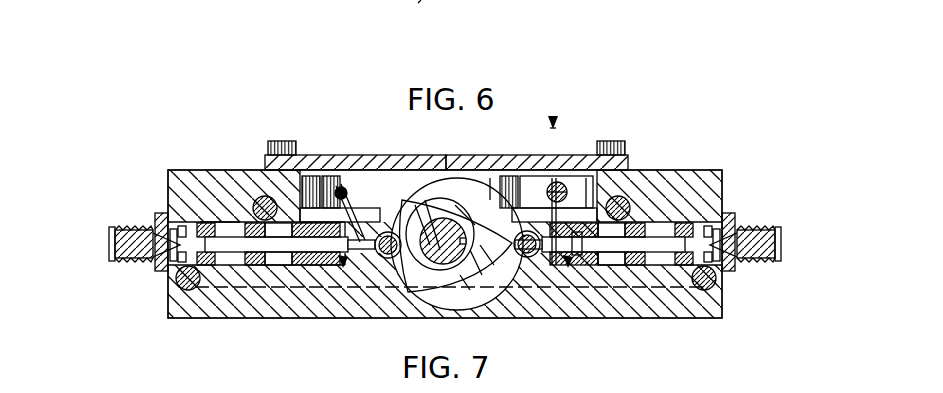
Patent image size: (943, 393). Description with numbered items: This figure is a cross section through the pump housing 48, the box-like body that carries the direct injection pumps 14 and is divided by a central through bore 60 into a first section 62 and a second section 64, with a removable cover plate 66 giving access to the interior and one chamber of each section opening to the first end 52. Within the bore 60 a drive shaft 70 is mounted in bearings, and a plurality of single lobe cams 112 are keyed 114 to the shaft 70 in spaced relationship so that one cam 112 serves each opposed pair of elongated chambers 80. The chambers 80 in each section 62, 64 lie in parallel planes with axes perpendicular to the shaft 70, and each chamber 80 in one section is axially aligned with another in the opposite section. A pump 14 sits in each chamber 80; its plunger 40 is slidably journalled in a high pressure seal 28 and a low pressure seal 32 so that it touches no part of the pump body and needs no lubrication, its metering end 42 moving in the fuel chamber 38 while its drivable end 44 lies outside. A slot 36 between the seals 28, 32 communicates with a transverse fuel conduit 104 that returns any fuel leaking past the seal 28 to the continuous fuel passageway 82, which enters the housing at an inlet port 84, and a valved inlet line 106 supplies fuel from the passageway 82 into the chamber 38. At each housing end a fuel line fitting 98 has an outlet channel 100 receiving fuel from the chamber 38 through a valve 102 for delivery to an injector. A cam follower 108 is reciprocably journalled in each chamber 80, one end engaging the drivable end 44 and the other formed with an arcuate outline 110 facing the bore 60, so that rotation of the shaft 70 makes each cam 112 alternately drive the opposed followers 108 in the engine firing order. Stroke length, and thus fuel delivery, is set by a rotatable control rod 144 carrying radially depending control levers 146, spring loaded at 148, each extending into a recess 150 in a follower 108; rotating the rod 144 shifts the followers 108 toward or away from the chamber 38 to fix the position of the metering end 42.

The direct injection pump 14 is at (224, 205).
The high pressure seal 28 is at (247, 268).
The low pressure seal 32 is at (275, 262).
The slot 36 is at (316, 178).
The chamber 38 is at (220, 262).
The plunger 40 is at (312, 265).
The metering end 42 is at (218, 225).
The drivable end 44 is at (352, 262).
The pump housing 48 is at (556, 118).
The first end 52 is at (553, 118).
The through bore 60 is at (467, 182).
The first section 62 is at (708, 163).
The second section 64 is at (247, 163).
The cover plate 66 is at (375, 182).
The drive shaft 70 is at (445, 252).
The elongated chamber 80 is at (410, 292).
The fuel passageway 82 is at (177, 283).
The inlet port 84 is at (409, 12).
The fuel line fitting 98 is at (147, 230).
The outlet channel 100 is at (110, 245).
The valve 102 is at (172, 213).
The fuel conduit 104 is at (283, 141).
The valved inlet line 106 is at (177, 262).
The cam follower 108 is at (338, 183).
The arcuate outline 110 is at (400, 182).
The single lobe cam 112 is at (418, 182).
The key 114 is at (497, 182).
The control rod 144 is at (560, 182).
The control lever 146 is at (538, 182).
The spring loading 148 is at (392, 182).
The recess 150 is at (588, 182).